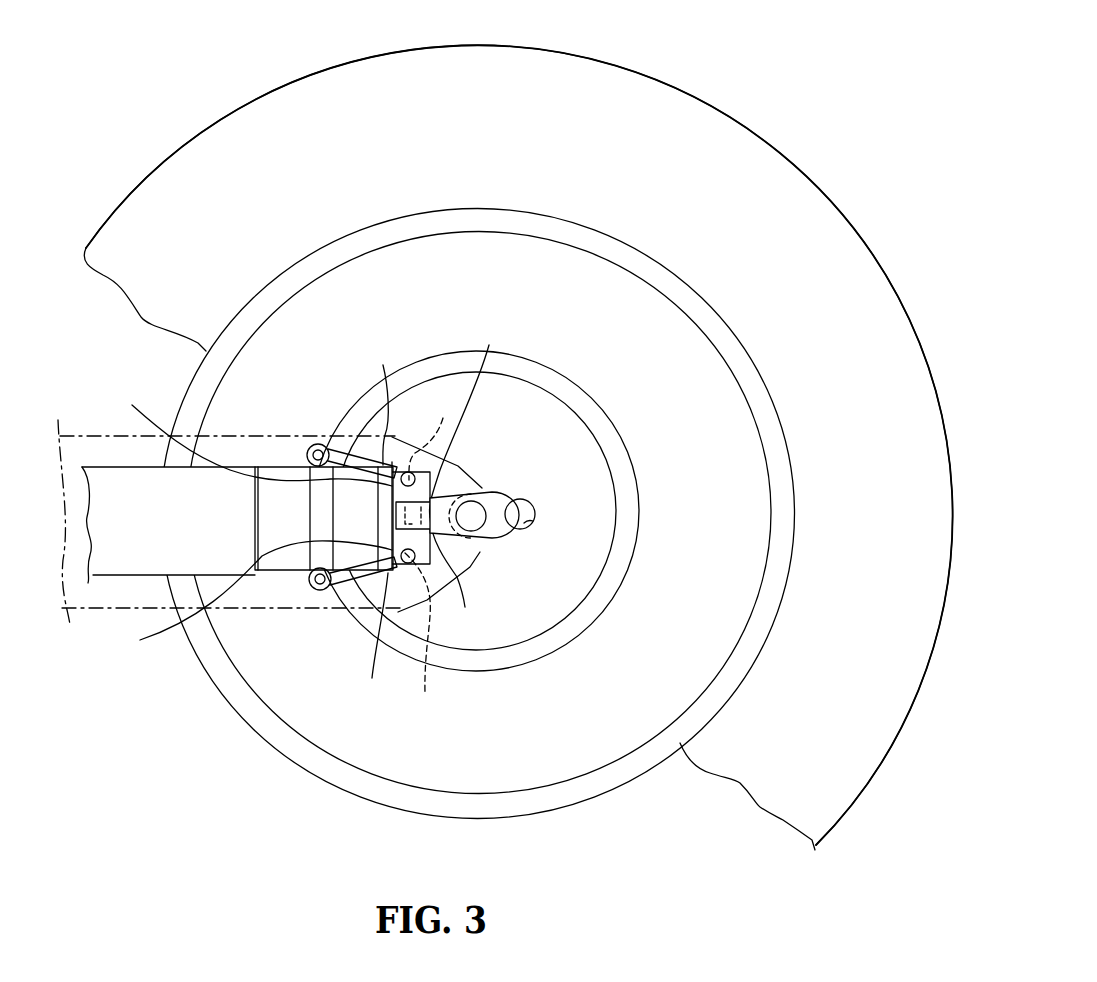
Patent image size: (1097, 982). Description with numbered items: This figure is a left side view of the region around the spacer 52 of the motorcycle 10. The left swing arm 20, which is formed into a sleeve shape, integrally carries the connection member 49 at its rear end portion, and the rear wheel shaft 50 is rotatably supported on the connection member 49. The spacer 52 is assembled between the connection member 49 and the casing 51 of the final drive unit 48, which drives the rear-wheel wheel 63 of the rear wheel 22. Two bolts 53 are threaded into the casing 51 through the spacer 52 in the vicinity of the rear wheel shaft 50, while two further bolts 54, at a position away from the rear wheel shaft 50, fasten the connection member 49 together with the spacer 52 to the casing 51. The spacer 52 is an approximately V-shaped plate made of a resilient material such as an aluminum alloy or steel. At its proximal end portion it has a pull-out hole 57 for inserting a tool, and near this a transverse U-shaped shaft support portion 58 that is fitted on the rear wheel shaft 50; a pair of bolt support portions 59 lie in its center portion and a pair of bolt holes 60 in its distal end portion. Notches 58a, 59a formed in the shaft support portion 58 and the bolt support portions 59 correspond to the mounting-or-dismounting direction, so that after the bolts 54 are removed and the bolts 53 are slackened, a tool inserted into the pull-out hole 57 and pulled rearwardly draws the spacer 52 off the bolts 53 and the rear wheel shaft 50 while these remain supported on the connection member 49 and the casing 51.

The brake device 10 is at (768, 85).
The left swing arm 20 is at (122, 467).
The rear wheel 22 is at (882, 261).
The final drive unit 48 is at (592, 402).
The connection member 49 is at (270, 434).
The rear wheel shaft 50 is at (471, 501).
The casing 51 is at (630, 518).
The spacer 52 is at (513, 493).
The bolts 53 is at (432, 559).
The bolts 54 is at (308, 431).
The pull-out hole 57 is at (524, 527).
The shaft support portion 58 is at (440, 576).
The notch 58a is at (454, 418).
The bolt support portions 59 is at (381, 524).
The notches 59a is at (242, 518).
The bolt holes 60 is at (307, 453).
The rear-wheel wheel 63 is at (767, 595).